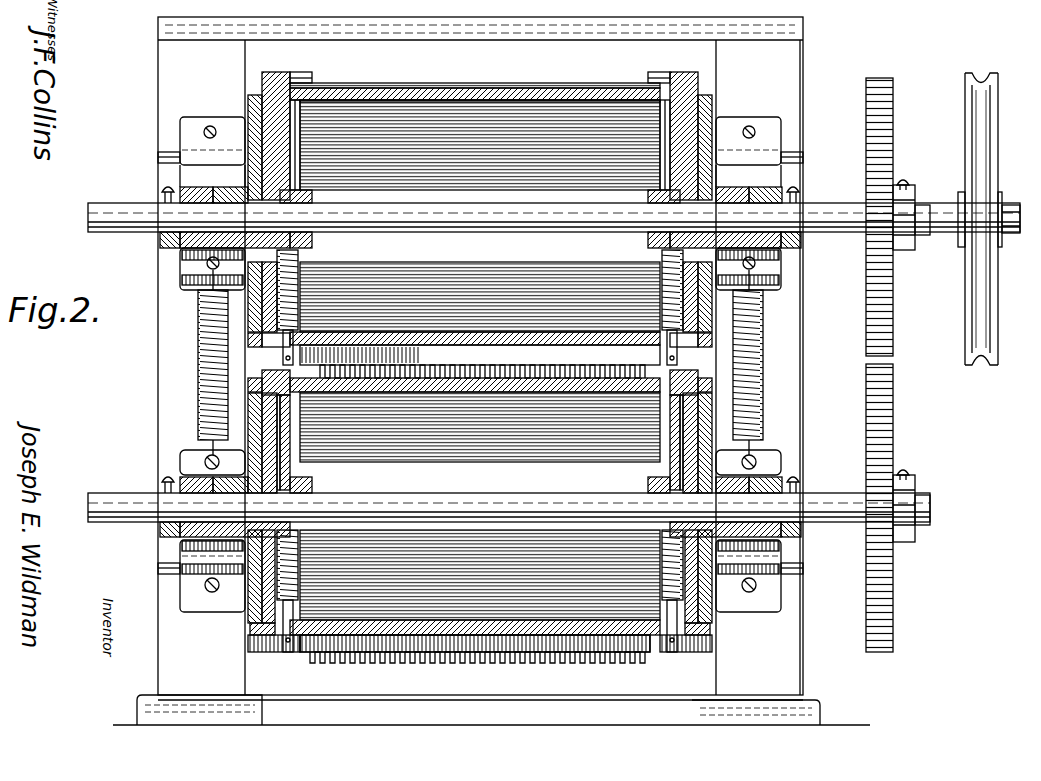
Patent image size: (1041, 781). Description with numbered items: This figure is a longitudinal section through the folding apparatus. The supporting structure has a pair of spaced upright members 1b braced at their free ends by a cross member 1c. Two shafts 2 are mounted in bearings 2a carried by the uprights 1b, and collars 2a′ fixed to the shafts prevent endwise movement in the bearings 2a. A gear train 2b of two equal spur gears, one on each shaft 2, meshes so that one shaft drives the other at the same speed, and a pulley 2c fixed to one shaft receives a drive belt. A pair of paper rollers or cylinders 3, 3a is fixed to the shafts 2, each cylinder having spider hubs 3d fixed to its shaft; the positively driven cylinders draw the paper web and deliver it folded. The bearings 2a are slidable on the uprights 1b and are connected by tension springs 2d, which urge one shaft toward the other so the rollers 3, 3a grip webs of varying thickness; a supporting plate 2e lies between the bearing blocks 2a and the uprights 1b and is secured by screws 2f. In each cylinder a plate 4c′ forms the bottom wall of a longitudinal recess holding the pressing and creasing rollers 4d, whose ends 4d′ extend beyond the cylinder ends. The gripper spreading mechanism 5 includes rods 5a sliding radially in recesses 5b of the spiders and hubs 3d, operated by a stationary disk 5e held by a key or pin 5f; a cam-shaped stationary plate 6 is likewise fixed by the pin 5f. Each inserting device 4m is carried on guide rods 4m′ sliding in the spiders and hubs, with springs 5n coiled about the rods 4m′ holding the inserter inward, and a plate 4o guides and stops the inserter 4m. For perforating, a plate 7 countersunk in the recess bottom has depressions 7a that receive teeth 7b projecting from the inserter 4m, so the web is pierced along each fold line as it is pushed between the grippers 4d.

The spaced members 1b is at (157, 88).
The cross member 1c is at (416, 724).
The shafts 2 is at (112, 203).
The bearings 2a is at (180, 255).
The collars 2a′ is at (178, 239).
The gear train 2b is at (898, 365).
The pulley 2c is at (965, 305).
The tension springs 2d is at (200, 382).
The supporting plate 2e is at (181, 404).
The screws 2f is at (770, 108).
The paper roller 3 is at (480, 216).
The paper roller 3a is at (650, 485).
The spider hubs 3d is at (312, 245).
The plate 4c′ is at (482, 87).
The pressing and creasing devices 4d is at (445, 83).
The extended roller ends 4d′ is at (300, 76).
The inserting device 4m is at (480, 499).
The guide rods 4m′ is at (293, 332).
The plate 4o is at (580, 338).
The gripper spreading mechanism 5 is at (276, 72).
The rods 5a is at (290, 145).
The recesses 5b is at (295, 192).
The operating device 5e is at (266, 178).
The key or pin 5f is at (158, 157).
The springs 5n is at (299, 276).
The stationary plate 6 is at (258, 100).
The plate 7 is at (520, 89).
The depressions 7a is at (570, 84).
The teeth 7b is at (475, 655).
The opening a is at (465, 361).